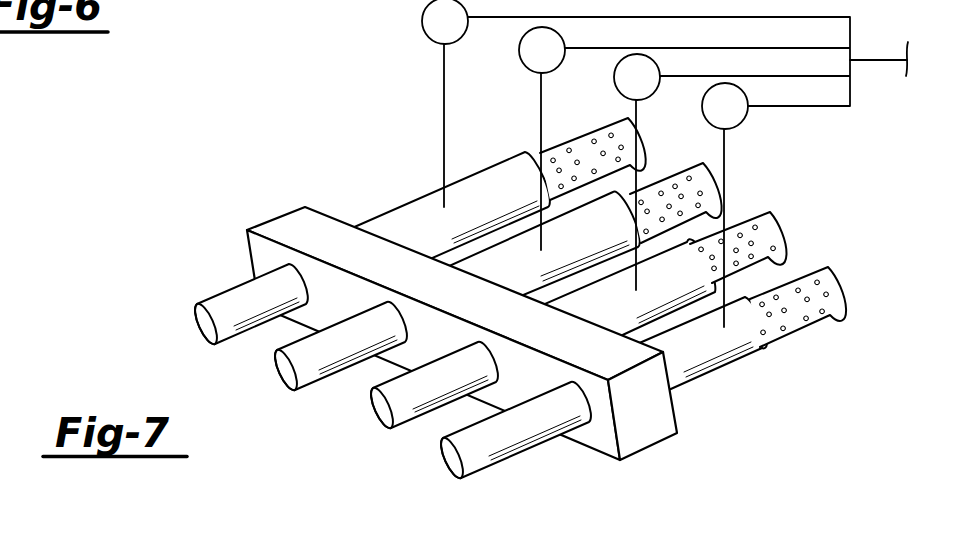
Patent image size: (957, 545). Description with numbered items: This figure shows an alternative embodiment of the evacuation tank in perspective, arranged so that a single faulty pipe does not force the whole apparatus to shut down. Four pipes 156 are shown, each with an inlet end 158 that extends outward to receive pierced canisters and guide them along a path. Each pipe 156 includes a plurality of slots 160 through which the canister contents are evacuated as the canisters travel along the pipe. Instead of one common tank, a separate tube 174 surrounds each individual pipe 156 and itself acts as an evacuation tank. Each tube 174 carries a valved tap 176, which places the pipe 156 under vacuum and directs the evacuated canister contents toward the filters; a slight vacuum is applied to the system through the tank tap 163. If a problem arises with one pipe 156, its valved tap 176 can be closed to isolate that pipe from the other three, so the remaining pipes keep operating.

The pipe 156 is at (757, 333).
The inlet end 158 is at (444, 450).
The slots 160 is at (808, 313).
The tank tap 163 is at (880, 61).
The tube 174 is at (713, 378).
The valved tap 176 is at (462, 34).